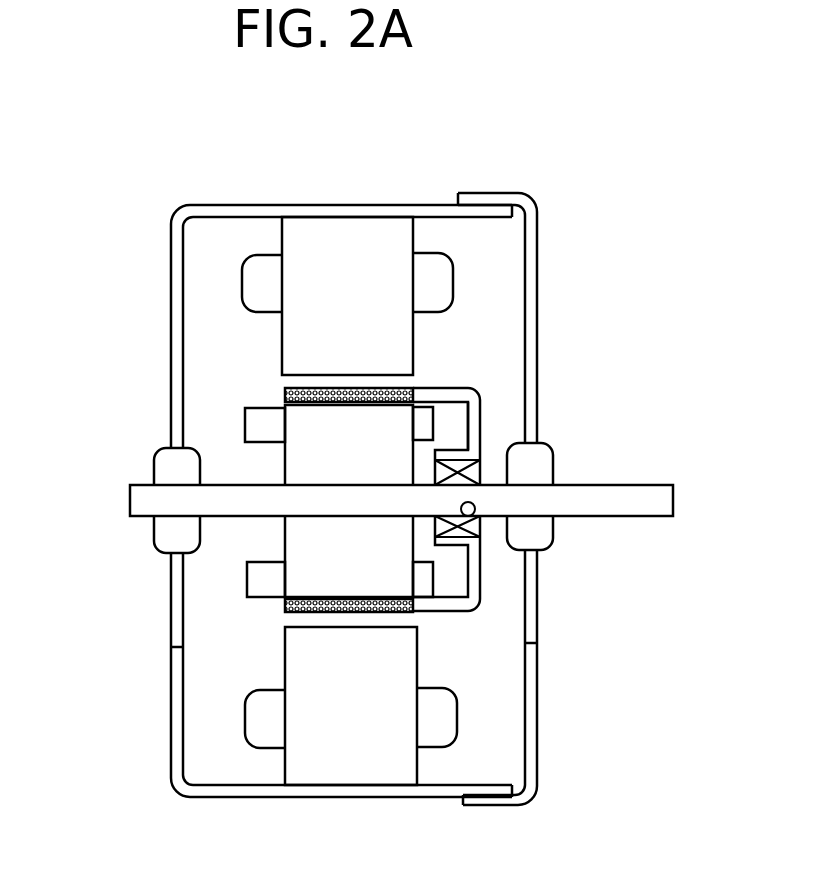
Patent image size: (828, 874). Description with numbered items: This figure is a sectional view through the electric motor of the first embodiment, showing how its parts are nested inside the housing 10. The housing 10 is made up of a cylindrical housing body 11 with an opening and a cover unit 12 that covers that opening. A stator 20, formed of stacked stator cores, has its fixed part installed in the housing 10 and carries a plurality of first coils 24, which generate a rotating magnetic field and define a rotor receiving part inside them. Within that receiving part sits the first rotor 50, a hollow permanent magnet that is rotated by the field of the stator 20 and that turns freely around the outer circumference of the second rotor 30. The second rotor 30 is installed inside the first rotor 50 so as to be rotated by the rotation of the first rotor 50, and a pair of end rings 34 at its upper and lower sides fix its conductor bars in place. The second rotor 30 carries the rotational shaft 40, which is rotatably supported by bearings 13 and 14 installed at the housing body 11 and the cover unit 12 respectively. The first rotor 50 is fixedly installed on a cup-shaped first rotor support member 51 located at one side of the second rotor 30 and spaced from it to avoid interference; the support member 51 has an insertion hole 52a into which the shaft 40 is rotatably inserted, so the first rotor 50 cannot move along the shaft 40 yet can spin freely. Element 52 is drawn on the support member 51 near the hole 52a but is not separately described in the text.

The housing 10 is at (280, 190).
The housing body 11 is at (185, 208).
The cover unit 12 is at (527, 256).
The bearing 13 is at (167, 535).
The bearing 14 is at (538, 537).
The stator 20 is at (298, 323).
The first coils 24 is at (257, 275).
The second rotor 30 is at (298, 452).
The end rings 34 is at (262, 582).
The rotational shaft 40 is at (600, 505).
The first rotor 50 is at (395, 390).
The first rotor support member 51 is at (473, 431).
The elastic member 52 is at (483, 453).
The insertion hole 52a is at (480, 514).